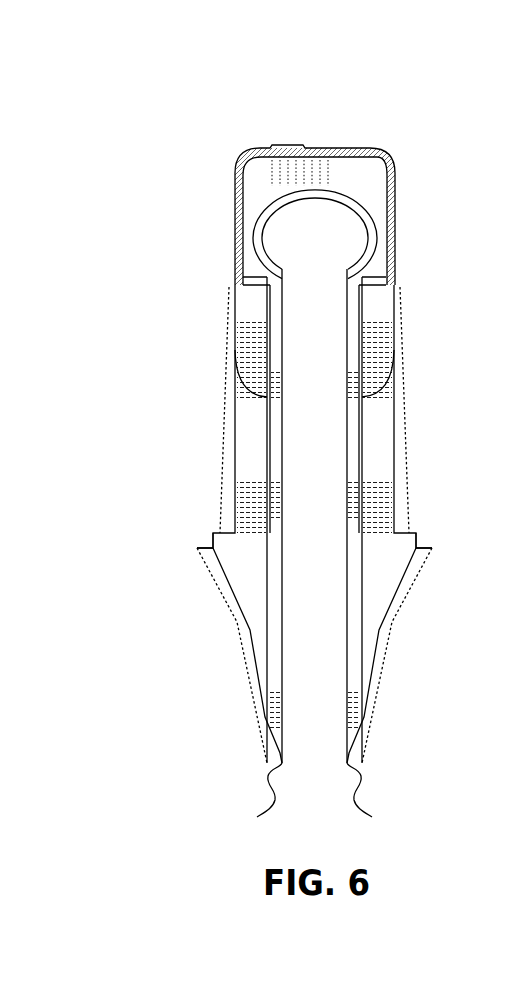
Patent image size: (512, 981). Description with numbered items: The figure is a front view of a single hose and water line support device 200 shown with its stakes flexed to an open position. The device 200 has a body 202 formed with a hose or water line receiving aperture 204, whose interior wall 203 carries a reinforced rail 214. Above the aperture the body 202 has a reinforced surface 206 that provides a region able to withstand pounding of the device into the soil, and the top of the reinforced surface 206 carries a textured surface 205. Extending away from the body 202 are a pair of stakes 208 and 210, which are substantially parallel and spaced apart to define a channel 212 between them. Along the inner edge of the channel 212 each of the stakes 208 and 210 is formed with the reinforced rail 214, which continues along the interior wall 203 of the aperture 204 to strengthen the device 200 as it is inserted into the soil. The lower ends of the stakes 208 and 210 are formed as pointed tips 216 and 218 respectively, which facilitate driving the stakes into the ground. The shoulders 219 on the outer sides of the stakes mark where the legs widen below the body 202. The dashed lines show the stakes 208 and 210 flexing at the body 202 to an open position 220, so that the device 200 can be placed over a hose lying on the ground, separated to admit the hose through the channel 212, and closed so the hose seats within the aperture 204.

The hose and water line support device 200 is at (315, 445).
The body 202 is at (397, 233).
The interior wall 203 is at (329, 215).
The hose or water line receiving aperture 204 is at (283, 232).
The textured surface 205 is at (282, 145).
The reinforced surface 206 is at (396, 185).
The stake 208 is at (247, 433).
The stake 210 is at (383, 433).
The channel 212 is at (303, 682).
The reinforced rail 214 is at (238, 352).
The pointed tip 216 is at (254, 800).
The pointed tip 218 is at (374, 800).
The shoulder 219 is at (198, 548).
The open position 220 is at (230, 618).